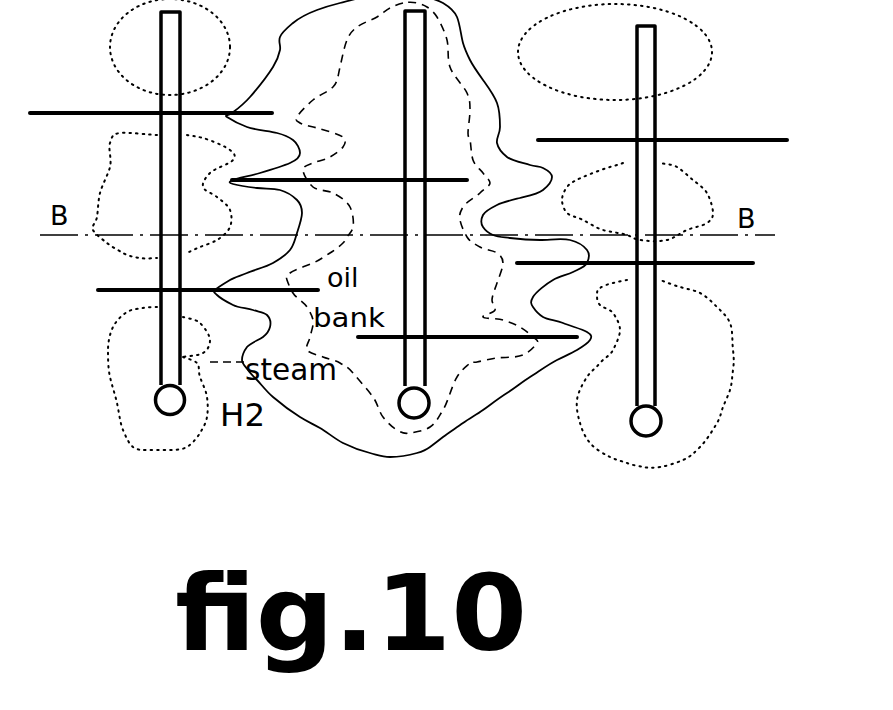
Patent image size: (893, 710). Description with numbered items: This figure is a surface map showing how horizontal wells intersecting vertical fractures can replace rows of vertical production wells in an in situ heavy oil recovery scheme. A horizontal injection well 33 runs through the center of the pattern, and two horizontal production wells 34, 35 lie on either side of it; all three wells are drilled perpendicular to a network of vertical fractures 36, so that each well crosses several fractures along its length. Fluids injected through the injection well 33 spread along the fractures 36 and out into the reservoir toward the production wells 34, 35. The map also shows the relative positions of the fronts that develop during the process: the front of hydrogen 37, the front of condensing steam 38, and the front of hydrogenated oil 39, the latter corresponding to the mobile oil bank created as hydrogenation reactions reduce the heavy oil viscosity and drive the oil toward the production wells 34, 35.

The horizontal injection well 33 is at (420, 418).
The horizontal production well 34 is at (650, 438).
The horizontal production well 35 is at (165, 418).
The vertical fractures 36 is at (718, 267).
The hydrogen front 37 is at (727, 408).
The condensing steam front 38 is at (497, 398).
The hydrogenated oil front 39 is at (503, 320).